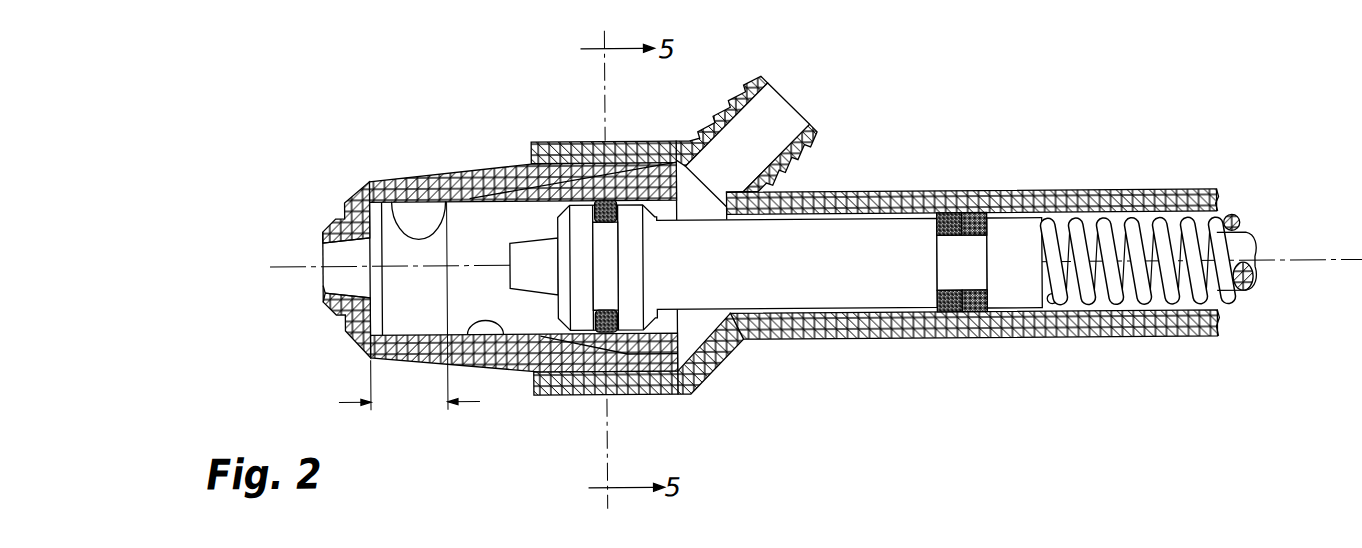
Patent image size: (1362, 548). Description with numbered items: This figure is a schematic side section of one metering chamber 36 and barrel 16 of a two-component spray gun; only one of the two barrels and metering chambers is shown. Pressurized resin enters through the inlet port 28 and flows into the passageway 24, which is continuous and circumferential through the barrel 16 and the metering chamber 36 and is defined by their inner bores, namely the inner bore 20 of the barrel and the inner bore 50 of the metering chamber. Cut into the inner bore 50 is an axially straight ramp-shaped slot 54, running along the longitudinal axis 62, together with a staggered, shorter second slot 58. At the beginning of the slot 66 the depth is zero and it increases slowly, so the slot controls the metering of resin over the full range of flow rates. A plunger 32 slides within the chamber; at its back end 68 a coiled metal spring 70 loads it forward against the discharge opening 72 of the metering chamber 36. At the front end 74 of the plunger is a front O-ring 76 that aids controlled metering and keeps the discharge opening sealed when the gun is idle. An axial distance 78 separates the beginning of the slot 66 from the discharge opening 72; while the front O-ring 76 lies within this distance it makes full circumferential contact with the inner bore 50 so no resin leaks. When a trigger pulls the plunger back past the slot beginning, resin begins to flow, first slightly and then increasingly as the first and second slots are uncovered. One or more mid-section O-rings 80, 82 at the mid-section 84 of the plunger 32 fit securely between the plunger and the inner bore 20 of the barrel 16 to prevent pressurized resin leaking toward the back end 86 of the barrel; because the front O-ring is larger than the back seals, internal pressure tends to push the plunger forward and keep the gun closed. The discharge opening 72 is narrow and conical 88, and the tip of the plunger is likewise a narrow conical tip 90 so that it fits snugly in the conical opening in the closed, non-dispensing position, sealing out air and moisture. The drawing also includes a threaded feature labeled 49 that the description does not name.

The barrel 16 is at (940, 340).
The inner bore of the barrel 20 is at (1222, 217).
The passageway 24 is at (690, 194).
The inlet port 28 is at (777, 102).
The plunger 32 is at (837, 229).
The metering chamber 36 is at (453, 176).
The threads 49 is at (766, 84).
The inner bore of the metering chamber 50 is at (492, 345).
The ramp-shaped slot 54 is at (627, 187).
The second slot 58 is at (637, 343).
The longitudinal axis 62 is at (268, 266).
The beginning of the slot 66 is at (405, 226).
The back end of the plunger 68 is at (1243, 292).
The coiled metal spring 70 is at (1140, 222).
The discharge opening 72 is at (323, 245).
The front end of the plunger 74 is at (596, 203).
The front O-ring 76 is at (612, 209).
The axial distance 78 is at (409, 310).
The mid-section O-ring 80 is at (947, 213).
The mid-section O-ring 82 is at (975, 215).
The mid-section of the plunger 84 is at (977, 248).
The back end of the barrel 86 is at (1170, 340).
The conical discharge opening 88 is at (325, 282).
The conical tip of the plunger 90 is at (527, 239).